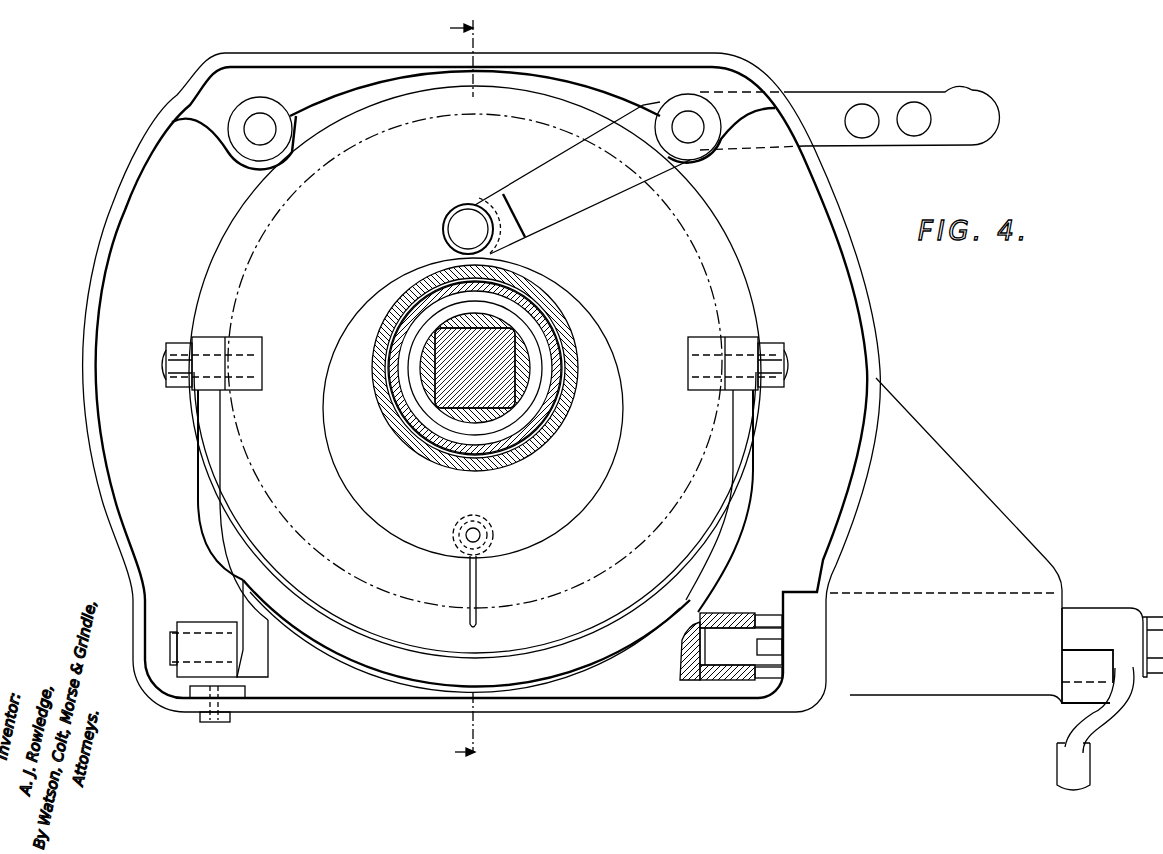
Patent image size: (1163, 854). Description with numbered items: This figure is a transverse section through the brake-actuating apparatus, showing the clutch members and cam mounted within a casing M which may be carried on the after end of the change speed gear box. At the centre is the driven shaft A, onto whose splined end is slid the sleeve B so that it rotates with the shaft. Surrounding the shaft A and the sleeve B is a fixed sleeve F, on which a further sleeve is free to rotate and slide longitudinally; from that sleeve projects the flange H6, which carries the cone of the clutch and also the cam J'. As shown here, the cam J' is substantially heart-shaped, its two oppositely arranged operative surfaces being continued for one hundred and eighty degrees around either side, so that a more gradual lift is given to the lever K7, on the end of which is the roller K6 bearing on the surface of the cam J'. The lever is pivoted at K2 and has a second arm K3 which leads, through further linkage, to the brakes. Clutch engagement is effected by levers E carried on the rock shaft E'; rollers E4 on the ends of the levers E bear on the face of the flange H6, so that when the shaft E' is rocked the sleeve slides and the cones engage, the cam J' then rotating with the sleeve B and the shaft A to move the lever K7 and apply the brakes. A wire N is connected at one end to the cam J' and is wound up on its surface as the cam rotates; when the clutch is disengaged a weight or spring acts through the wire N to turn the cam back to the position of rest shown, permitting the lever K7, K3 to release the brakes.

The casing M is at (875, 331).
The flange H6 is at (372, 212).
The cam J' is at (482, 408).
The wire N is at (470, 582).
The fixed sleeve F is at (403, 323).
The sleeve B is at (440, 393).
The driven shaft A is at (443, 377).
The levers E is at (504, 533).
The rollers E4 is at (235, 343).
The rock shaft E' is at (731, 685).
The roller K6 is at (470, 202).
The lever K7 is at (582, 185).
The pivot K2 is at (695, 125).
The second arm K3 is at (830, 110).